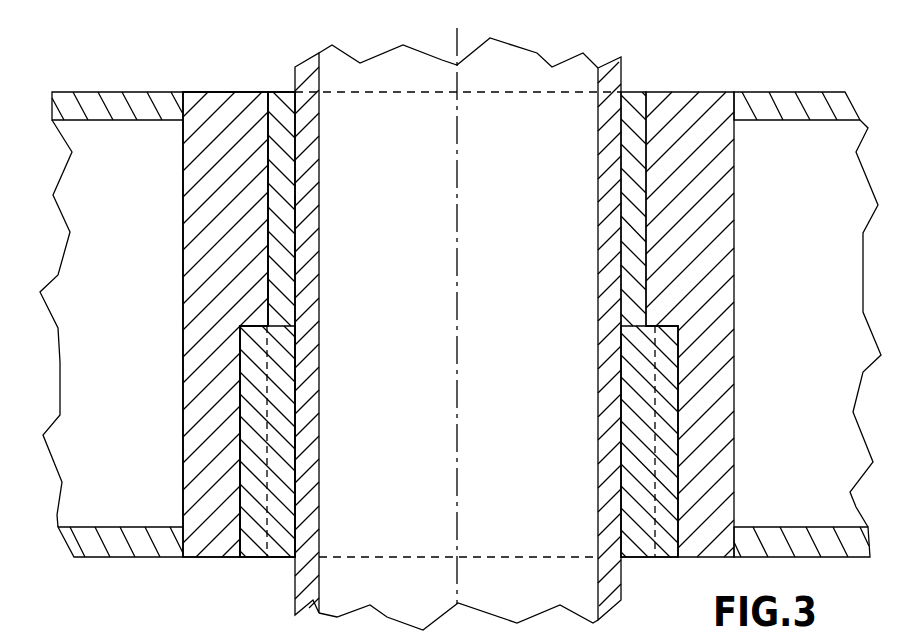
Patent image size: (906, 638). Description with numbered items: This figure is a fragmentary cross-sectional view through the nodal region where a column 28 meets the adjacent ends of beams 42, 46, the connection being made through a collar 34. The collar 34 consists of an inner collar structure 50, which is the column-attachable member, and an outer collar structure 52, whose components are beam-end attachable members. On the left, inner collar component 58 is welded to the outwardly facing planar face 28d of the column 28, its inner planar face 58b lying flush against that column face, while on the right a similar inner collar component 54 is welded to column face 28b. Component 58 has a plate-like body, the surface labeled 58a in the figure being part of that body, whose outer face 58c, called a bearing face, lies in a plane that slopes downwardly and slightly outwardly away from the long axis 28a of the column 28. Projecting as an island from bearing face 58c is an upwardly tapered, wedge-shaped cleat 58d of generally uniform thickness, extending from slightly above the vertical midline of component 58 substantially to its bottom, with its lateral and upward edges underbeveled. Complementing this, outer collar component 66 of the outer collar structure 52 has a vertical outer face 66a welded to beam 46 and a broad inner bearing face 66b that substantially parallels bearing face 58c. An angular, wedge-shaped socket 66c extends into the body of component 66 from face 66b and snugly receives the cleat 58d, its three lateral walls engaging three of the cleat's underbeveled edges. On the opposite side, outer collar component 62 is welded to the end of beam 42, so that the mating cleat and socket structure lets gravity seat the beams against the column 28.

The column 28 is at (624, 73).
The long axis of column 28a is at (458, 191).
The planar face of column 28b is at (625, 410).
The planar face of column 28d is at (300, 495).
The collar 34 is at (176, 268).
The beam 42 is at (794, 88).
The beam 46 is at (104, 88).
The inner collar structure 50 is at (280, 88).
The outer collar structure 52 is at (217, 88).
The inner collar component 54 is at (627, 176).
The inner collar component 58 is at (292, 146).
The sleeve inner surface 58a is at (284, 208).
The inner planar face 58b is at (299, 255).
The bearing face 58c is at (293, 173).
The cleat 58d is at (250, 392).
The outer collar component 62 is at (691, 107).
The outer collar component 66 is at (215, 543).
The outer face 66a is at (183, 151).
The bearing face 66b is at (272, 282).
The socket 66c is at (243, 428).